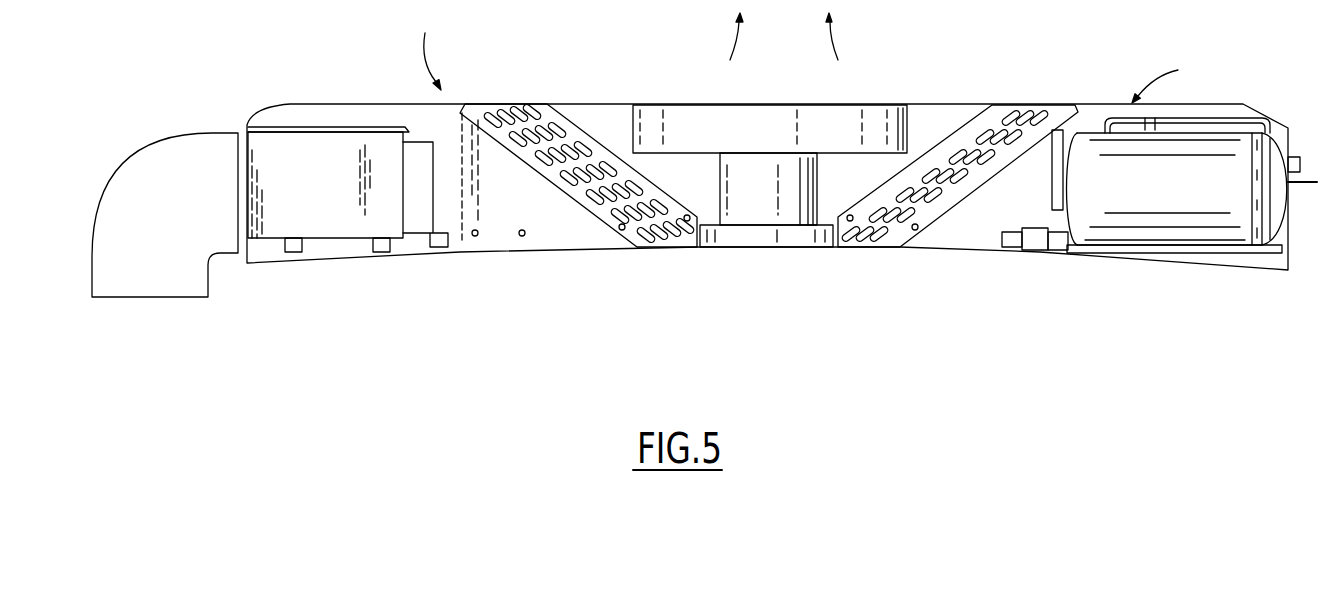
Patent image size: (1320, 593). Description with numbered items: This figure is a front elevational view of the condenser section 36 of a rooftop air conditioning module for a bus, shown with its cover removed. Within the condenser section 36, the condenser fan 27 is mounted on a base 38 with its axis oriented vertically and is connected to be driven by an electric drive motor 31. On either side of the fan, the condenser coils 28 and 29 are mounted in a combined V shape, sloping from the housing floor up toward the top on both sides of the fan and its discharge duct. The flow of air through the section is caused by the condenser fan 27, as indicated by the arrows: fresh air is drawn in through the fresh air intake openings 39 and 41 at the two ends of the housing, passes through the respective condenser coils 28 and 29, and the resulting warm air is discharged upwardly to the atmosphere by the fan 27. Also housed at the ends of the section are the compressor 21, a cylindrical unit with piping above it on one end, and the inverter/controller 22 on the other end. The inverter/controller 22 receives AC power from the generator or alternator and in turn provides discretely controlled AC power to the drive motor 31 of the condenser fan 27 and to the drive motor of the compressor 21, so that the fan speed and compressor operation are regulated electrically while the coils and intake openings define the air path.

The compressor 21 is at (1175, 200).
The inverter/controller 22 is at (348, 212).
The condenser fan 27 is at (860, 110).
The condenser coil 28 is at (585, 174).
The condenser coil 29 is at (937, 193).
The drive motor 31 is at (765, 208).
The condenser section 36 is at (1078, 55).
The base 38 is at (800, 237).
The fresh air intake opening 39 is at (1197, 105).
The fresh air intake opening 41 is at (382, 105).